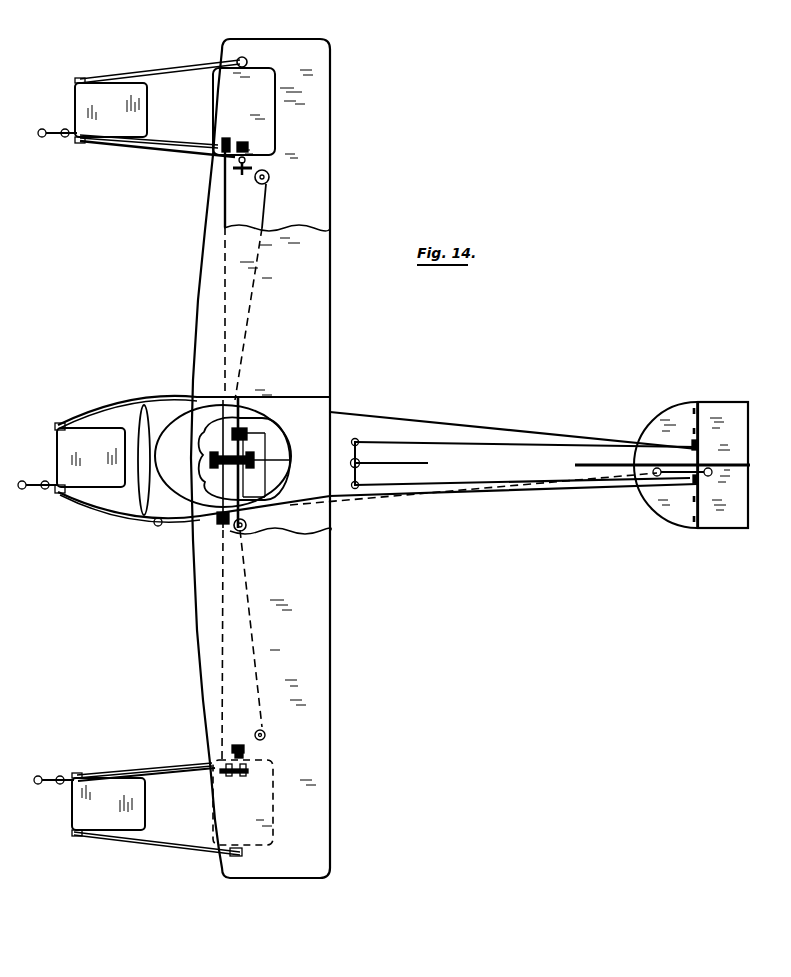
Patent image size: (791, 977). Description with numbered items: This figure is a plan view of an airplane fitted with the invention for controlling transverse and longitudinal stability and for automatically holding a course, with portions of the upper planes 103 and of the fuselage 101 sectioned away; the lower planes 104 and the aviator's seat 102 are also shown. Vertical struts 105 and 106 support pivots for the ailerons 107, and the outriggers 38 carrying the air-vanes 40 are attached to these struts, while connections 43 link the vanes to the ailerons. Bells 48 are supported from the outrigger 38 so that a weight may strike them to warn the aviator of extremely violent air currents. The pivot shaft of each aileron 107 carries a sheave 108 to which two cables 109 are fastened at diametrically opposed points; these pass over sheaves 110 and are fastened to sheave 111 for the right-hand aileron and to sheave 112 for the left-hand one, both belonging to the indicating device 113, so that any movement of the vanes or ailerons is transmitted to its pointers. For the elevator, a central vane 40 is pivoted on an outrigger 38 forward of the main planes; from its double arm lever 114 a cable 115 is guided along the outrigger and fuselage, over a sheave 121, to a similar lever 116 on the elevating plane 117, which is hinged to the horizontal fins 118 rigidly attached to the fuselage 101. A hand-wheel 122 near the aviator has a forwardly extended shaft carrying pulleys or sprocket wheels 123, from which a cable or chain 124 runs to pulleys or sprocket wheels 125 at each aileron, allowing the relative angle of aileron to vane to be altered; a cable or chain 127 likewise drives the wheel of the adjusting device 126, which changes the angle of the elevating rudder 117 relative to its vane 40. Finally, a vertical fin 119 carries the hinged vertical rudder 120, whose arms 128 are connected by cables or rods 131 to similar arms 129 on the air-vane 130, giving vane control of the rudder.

The outrigger 38 is at (147, 68).
The air-vane 40 is at (82, 105).
The connections 43 is at (182, 144).
The bells 48 is at (63, 138).
The fuselage 101 is at (537, 477).
The aviator's seat 102 is at (280, 470).
The upper planes 103 is at (310, 272).
The lower planes 104 is at (312, 213).
The vertical strut 105 is at (245, 63).
The vertical strut 106 is at (246, 160).
The aileron 107 is at (263, 115).
The sheave 108 is at (240, 169).
The cables 109 is at (263, 195).
The sheaves 110 is at (270, 177).
The sheave 111 is at (220, 427).
The sheave 112 is at (242, 437).
The indicating device 113 is at (250, 455).
The double arm lever 114 is at (55, 480).
The cable 115 is at (670, 480).
The lever 116 is at (706, 474).
The elevating plane 117 is at (717, 522).
The horizontal fins 118 is at (663, 420).
The vertical fin 119 is at (593, 462).
The vertical rudder 120 is at (742, 470).
The sheave 121 is at (160, 525).
The hand-wheel 122 is at (245, 460).
The pulleys or sprocket wheels 123 is at (220, 522).
The cable or chain 124 is at (227, 213).
The pulleys or sprocket wheels 125 is at (222, 138).
The adjusting device 126 is at (215, 465).
The cable or chain 127 is at (228, 500).
The arms 128 is at (695, 447).
The arms 129 is at (375, 442).
The air-vane 130 is at (417, 462).
The cables or rods 131 is at (493, 442).